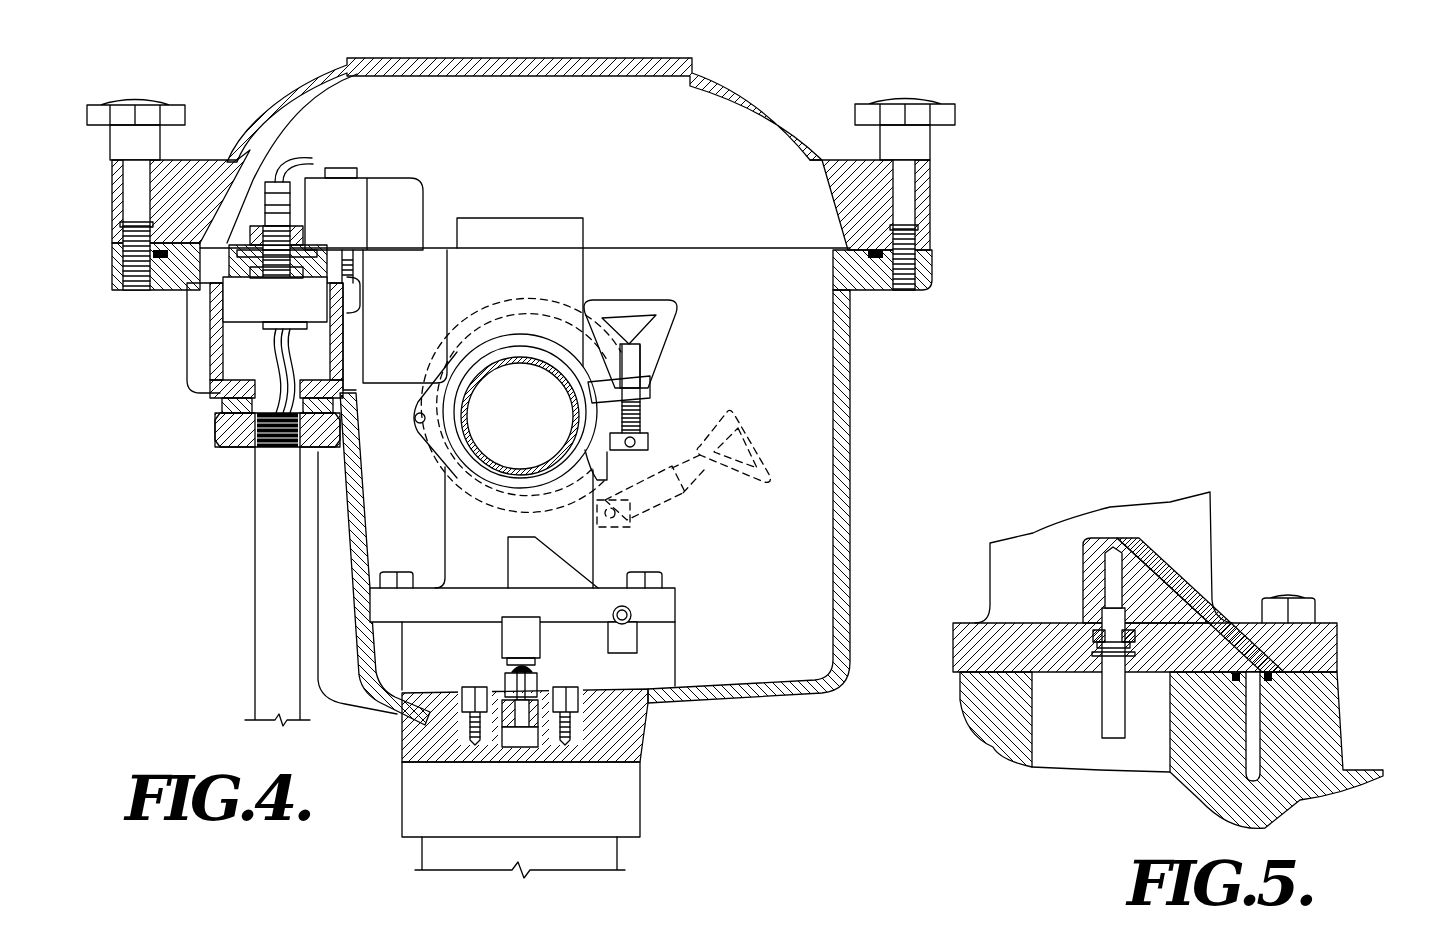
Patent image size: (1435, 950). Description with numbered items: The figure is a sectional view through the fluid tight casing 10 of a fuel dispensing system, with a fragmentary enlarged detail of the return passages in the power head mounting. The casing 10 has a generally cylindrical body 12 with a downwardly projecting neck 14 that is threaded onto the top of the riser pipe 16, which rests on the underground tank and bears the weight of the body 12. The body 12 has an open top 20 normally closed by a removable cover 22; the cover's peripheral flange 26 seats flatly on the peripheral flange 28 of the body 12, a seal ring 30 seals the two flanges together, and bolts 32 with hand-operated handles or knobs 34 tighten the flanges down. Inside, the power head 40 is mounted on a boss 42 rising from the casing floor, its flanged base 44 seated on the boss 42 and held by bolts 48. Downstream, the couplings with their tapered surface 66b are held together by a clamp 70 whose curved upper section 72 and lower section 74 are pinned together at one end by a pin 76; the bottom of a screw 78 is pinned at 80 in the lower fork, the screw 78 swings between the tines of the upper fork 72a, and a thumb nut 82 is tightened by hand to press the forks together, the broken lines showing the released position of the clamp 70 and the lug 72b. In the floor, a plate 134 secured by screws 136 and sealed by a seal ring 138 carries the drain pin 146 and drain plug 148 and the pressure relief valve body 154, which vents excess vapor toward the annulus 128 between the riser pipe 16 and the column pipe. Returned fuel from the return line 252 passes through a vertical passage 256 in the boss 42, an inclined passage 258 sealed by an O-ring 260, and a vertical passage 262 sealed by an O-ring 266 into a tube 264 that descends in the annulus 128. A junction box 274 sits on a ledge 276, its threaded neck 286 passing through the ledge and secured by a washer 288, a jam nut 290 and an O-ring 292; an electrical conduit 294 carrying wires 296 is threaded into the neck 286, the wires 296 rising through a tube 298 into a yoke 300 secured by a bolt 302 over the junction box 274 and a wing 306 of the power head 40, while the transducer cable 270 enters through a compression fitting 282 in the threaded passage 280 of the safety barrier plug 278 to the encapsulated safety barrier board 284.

In FIG. 4, the fluid tight casing 10 is at (876, 386).
In FIG. 4, the body 12 is at (847, 458).
In FIG. 4, the neck 14 is at (633, 817).
In FIG. 4, the riser pipe 16 is at (612, 862).
In FIG. 4, the open top 20 is at (788, 248).
In FIG. 4, the cover 22 is at (722, 68).
In FIG. 4, the peripheral flange 26 is at (926, 196).
In FIG. 4, the peripheral flange 28 is at (918, 276).
In FIG. 4, the seal ring 30 is at (848, 268).
In FIG. 4, the bolts 32 is at (125, 196).
In FIG. 4, the handles or knobs 34 is at (160, 137).
In FIG. 5, the power head 40 is at (1203, 527).
In FIG. 4, the boss 42 is at (663, 674).
In FIG. 5, the boss 42 is at (1335, 748).
In FIG. 4, the flanged base 44 is at (660, 610).
In FIG. 5, the flanged base 44 is at (1315, 655).
In FIG. 4, the bolts 48 is at (387, 578).
In FIG. 5, the bolts 48 is at (1298, 598).
In FIG. 4, the tapered surface 66b is at (548, 366).
In FIG. 4, the clamp 70 is at (530, 330).
In FIG. 4, the upper section 72 is at (510, 336).
In FIG. 4, the upper fork 72a is at (647, 388).
In FIG. 4, the clamp lug 72b is at (647, 435).
In FIG. 4, the lower section 74 is at (483, 487).
In FIG. 4, the pin 76 is at (413, 415).
In FIG. 4, the screw 78 is at (637, 407).
In FIG. 4, the pin 80 is at (635, 445).
In FIG. 4, the thumb nut 82 is at (653, 307).
In FIG. 5, the annulus 128 is at (1147, 765).
In FIG. 4, the plate 134 is at (537, 690).
In FIG. 4, the screws 136 is at (462, 745).
In FIG. 4, the seal ring 138 is at (492, 745).
In FIG. 4, the pin 146 is at (517, 678).
In FIG. 4, the drain plug 148 is at (513, 748).
In FIG. 4, the pressure relief valve body 154 is at (527, 627).
In FIG. 4, the return line 252 is at (626, 627).
In FIG. 5, the vertical passage 256 is at (1252, 737).
In FIG. 5, the inclined passage 258 is at (1142, 578).
In FIG. 5, the O-ring 260 is at (1232, 676).
In FIG. 5, the vertical passage 262 is at (1100, 592).
In FIG. 5, the tube 264 is at (1115, 710).
In FIG. 5, the O-ring 266 is at (1090, 625).
In FIG. 4, the transducer cable 270 is at (312, 161).
In FIG. 4, the junction box 274 is at (221, 343).
In FIG. 4, the ledge 276 is at (193, 374).
In FIG. 4, the safety barrier plug 278 is at (327, 245).
In FIG. 4, the threaded passage 280 is at (265, 212).
In FIG. 4, the compression fitting 282 is at (278, 172).
In FIG. 4, the safety barrier board 284 is at (232, 272).
In FIG. 4, the neck 286 is at (247, 450).
In FIG. 4, the washer 288 is at (222, 405).
In FIG. 4, the jam nut 290 is at (217, 426).
In FIG. 4, the O-ring 292 is at (325, 388).
In FIG. 4, the electrical conduit 294 is at (263, 537).
In FIG. 4, the wires 296 is at (274, 357).
In FIG. 4, the tube 298 is at (278, 312).
In FIG. 4, the yoke 300 is at (392, 190).
In FIG. 4, the bolt 302 is at (350, 172).
In FIG. 4, the wing 306 is at (405, 265).